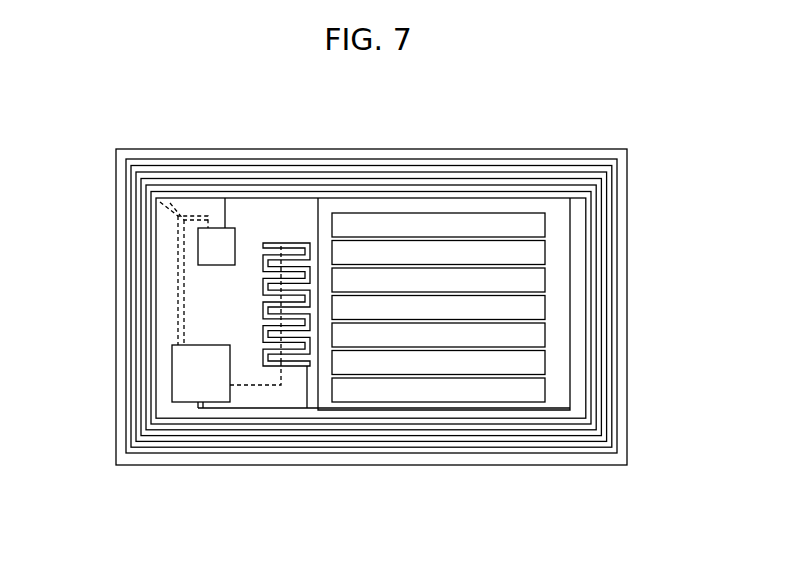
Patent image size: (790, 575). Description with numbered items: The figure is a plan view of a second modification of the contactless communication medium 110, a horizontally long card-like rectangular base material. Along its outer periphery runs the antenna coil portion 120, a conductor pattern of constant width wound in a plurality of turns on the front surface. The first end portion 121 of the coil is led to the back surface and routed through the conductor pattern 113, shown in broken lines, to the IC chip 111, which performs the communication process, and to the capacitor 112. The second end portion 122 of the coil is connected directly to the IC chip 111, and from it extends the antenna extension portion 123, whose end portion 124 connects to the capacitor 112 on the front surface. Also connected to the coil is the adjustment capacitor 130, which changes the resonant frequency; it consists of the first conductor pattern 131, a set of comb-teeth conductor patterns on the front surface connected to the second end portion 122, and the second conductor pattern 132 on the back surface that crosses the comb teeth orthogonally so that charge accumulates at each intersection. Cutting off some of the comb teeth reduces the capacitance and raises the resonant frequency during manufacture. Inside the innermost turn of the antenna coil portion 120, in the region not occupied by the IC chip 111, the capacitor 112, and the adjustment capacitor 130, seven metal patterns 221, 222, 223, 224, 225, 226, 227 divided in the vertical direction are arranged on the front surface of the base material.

The contactless communication medium 110 is at (478, 468).
The IC chip 111 is at (217, 265).
The capacitor 112 is at (176, 390).
The conductor pattern 113 is at (176, 289).
The antenna coil portion 120 is at (490, 156).
The first end portion 121 is at (127, 158).
The second end portion 122 is at (232, 215).
The antenna extension portion 123 is at (407, 210).
The end portion 124 is at (200, 408).
The adjustment capacitor 130 is at (300, 378).
The first conductor pattern 131 is at (297, 243).
The second conductor pattern 132 is at (283, 240).
The metal pattern 221 is at (547, 224).
The metal pattern 222 is at (547, 252).
The metal pattern 223 is at (547, 279).
The metal pattern 224 is at (547, 307).
The metal pattern 225 is at (547, 334).
The metal pattern 226 is at (547, 362).
The metal pattern 227 is at (547, 389).